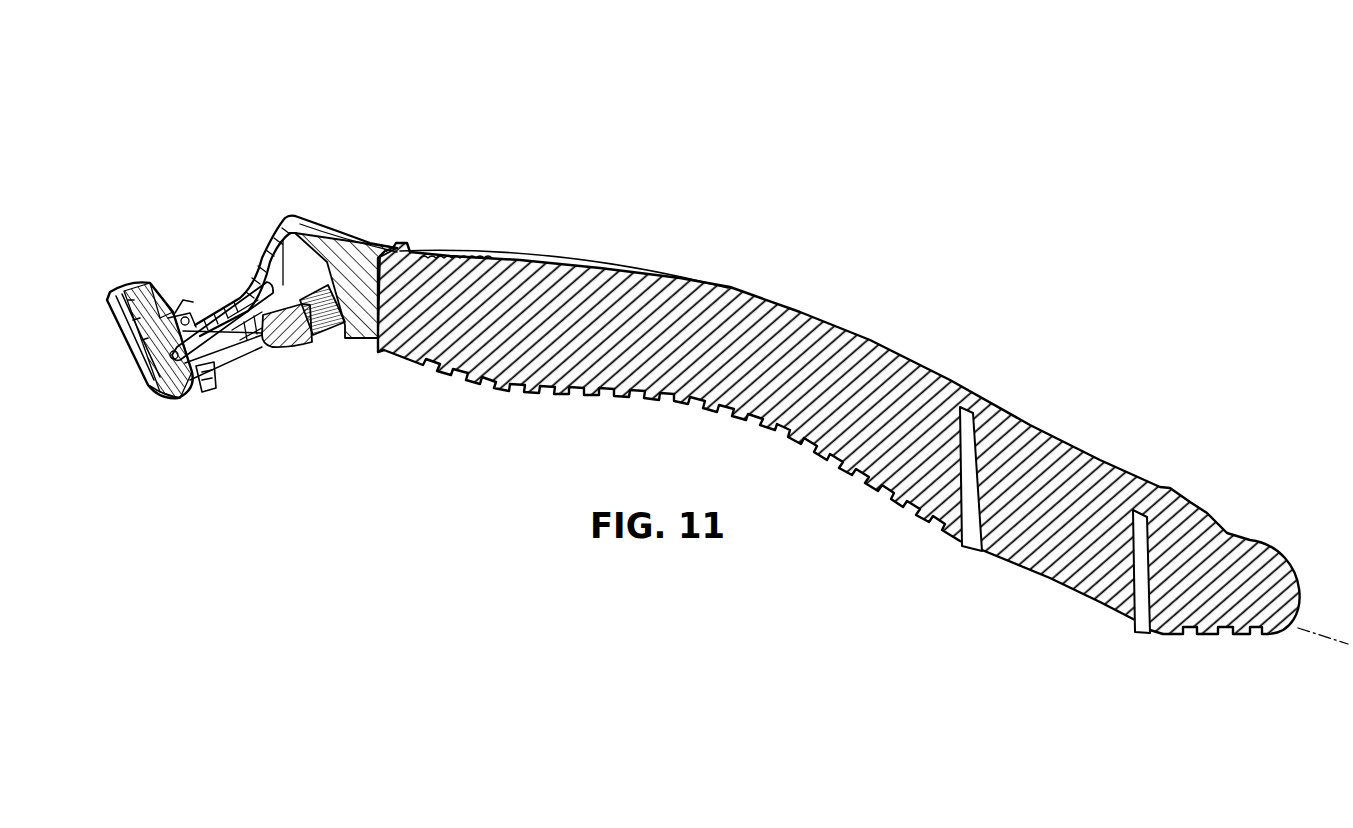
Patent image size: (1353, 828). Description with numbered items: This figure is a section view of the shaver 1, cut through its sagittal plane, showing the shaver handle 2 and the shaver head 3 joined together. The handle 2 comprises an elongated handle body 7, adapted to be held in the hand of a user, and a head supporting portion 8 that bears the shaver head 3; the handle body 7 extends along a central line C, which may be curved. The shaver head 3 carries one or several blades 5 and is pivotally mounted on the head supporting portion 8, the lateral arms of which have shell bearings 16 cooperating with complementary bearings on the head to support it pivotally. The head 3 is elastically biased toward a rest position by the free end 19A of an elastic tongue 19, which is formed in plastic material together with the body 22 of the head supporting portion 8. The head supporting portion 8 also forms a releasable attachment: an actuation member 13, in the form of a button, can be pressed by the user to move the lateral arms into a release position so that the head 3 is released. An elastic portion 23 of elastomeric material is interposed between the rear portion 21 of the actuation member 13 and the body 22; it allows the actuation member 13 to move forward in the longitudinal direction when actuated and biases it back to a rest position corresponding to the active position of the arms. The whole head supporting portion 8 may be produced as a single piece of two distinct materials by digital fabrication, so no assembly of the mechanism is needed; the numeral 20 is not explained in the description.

The shaver 1 is at (673, 339).
The shaver handle 2 is at (822, 237).
The shaver head 3 is at (117, 273).
The blades 5 is at (120, 371).
The handle body 7 is at (731, 288).
The head supporting portion 8 is at (362, 220).
The actuation member 13 is at (291, 222).
The shell bearings 16 is at (200, 382).
The elastic tongue 19 is at (219, 312).
The free end of the elastic tongue 19A is at (183, 318).
The front edge of shaving head 20 is at (172, 394).
The rear portion of the actuation member 21 is at (354, 302).
The body 22 is at (290, 328).
The elastic portion 23 is at (322, 317).
The central line C is at (1310, 636).